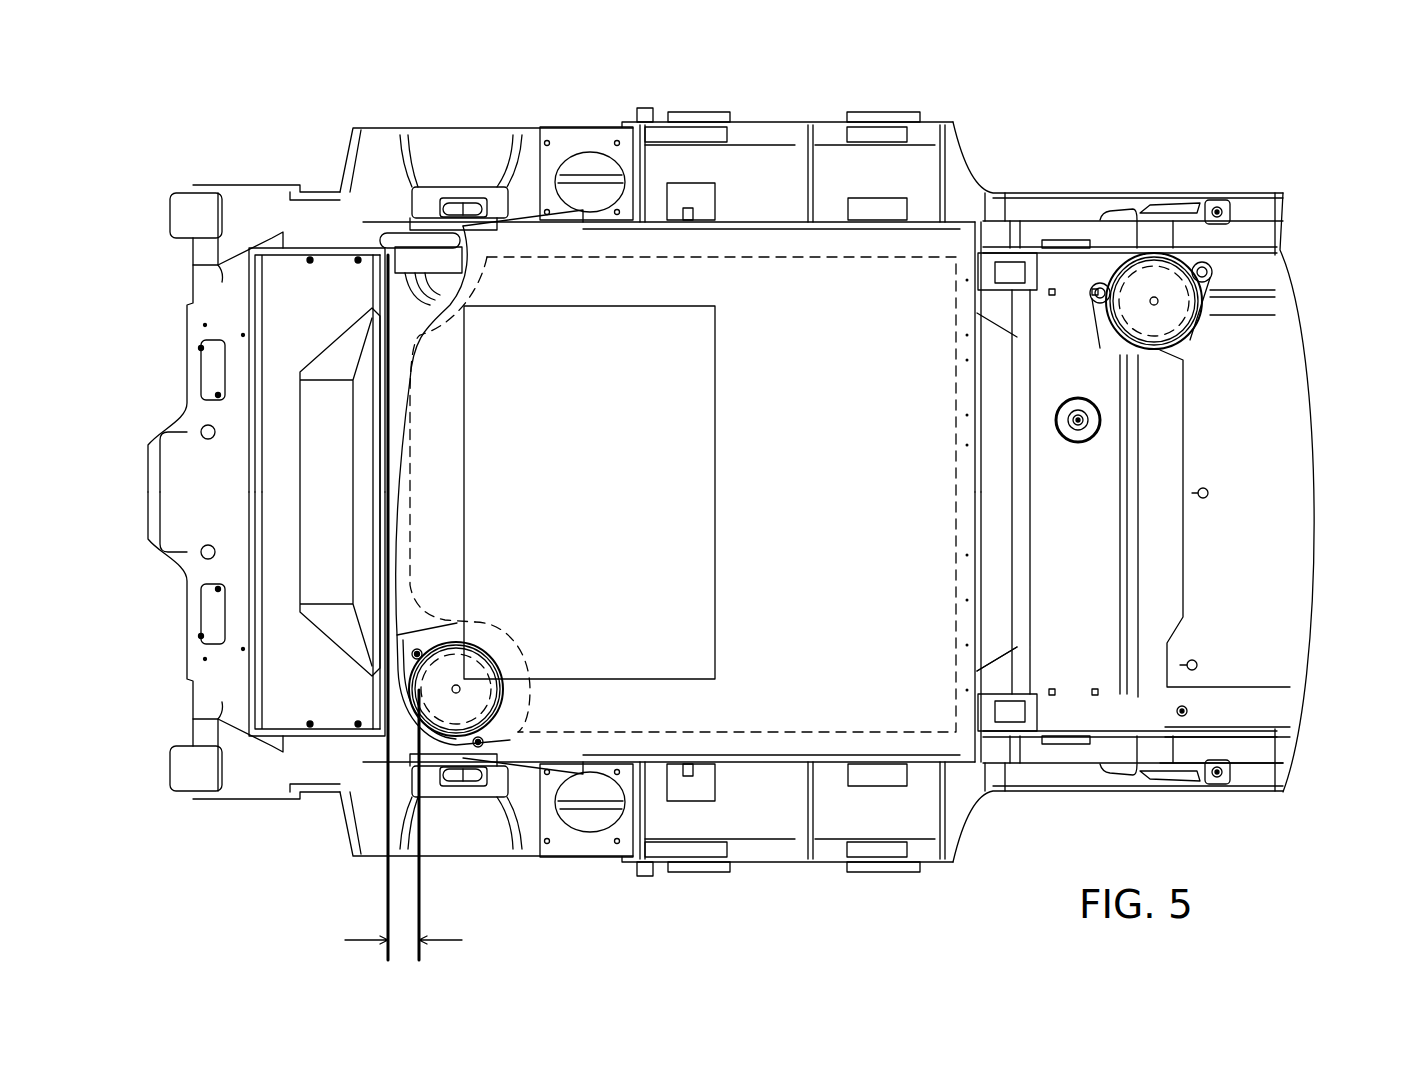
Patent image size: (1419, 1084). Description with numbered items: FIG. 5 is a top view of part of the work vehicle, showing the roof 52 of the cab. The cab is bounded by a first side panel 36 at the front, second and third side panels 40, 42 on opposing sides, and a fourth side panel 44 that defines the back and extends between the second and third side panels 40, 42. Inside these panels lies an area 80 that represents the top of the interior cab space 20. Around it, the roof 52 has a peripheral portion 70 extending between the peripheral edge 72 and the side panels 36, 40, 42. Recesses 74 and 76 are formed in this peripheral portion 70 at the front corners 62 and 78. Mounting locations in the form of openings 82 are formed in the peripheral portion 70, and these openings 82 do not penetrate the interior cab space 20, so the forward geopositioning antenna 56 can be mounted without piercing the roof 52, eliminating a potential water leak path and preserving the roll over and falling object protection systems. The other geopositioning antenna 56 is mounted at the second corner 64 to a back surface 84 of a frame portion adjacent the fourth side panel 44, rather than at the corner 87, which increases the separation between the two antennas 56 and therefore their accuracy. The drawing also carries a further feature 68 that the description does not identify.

The interior cab space 20 is at (878, 470).
The first side panel 36 is at (373, 303).
The second side panel 40 is at (783, 735).
The third side panel 42 is at (763, 258).
The fourth side panel 44 is at (960, 590).
The roof 52 is at (687, 233).
The geopositioning antenna 56 is at (516, 644).
The front corner 62 is at (528, 682).
The second corner 64 is at (1212, 268).
The offset distance 68 is at (373, 937).
The peripheral portion 70 is at (400, 463).
The peripheral edge 72 is at (730, 230).
The recess 74 is at (527, 707).
The recess 76 is at (344, 205).
The front corner 78 is at (425, 275).
The area 80 is at (672, 492).
The opening 82 is at (420, 648).
The back surface 84 is at (1138, 488).
The corner 87 is at (975, 194).